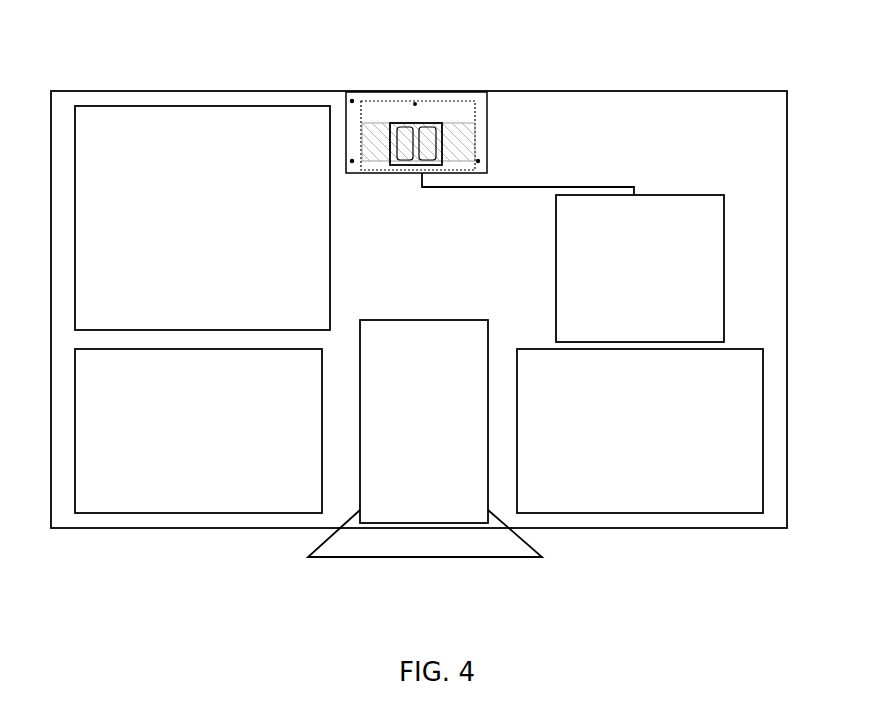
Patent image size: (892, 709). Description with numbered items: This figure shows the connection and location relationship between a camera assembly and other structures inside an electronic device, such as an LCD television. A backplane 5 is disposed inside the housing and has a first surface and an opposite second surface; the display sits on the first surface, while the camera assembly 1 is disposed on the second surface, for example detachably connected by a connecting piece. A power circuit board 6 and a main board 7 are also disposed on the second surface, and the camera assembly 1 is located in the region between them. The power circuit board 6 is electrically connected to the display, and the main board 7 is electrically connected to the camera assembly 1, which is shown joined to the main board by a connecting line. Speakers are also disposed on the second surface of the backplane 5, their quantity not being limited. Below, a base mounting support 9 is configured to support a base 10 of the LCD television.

The camera assembly 1 is at (487, 98).
The backplane 5 is at (689, 131).
The power circuit board 6 is at (146, 131).
The main board 7 is at (703, 270).
The base mounting support 9 is at (425, 487).
The base 10 is at (511, 547).